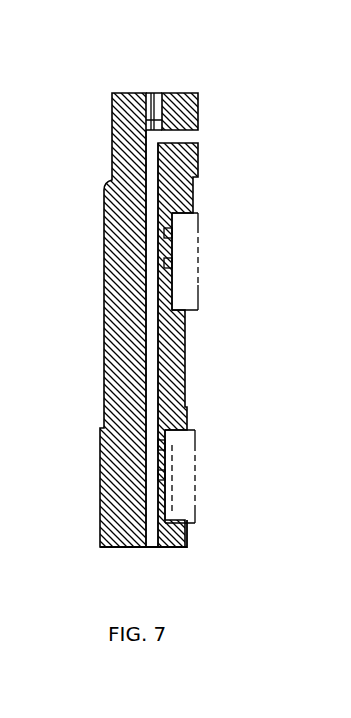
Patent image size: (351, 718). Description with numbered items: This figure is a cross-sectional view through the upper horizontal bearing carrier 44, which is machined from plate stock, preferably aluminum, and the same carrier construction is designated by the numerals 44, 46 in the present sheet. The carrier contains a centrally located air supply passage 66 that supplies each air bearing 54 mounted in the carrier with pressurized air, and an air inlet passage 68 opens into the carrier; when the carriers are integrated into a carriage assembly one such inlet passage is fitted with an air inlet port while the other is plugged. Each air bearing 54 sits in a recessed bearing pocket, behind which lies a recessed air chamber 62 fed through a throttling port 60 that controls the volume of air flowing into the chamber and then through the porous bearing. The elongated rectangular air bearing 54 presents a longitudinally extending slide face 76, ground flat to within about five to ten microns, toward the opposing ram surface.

The upper horizontal bearing carrier 44 is at (97, 128).
The housing body / lid 46 is at (172, 320).
The air inlet passage 68 is at (160, 88).
The air supply passage 66 is at (145, 378).
The air bearing 54 is at (205, 225).
The recessed air chamber 62 is at (157, 232).
The throttling port 60 is at (157, 262).
The slide face 76 is at (197, 538).